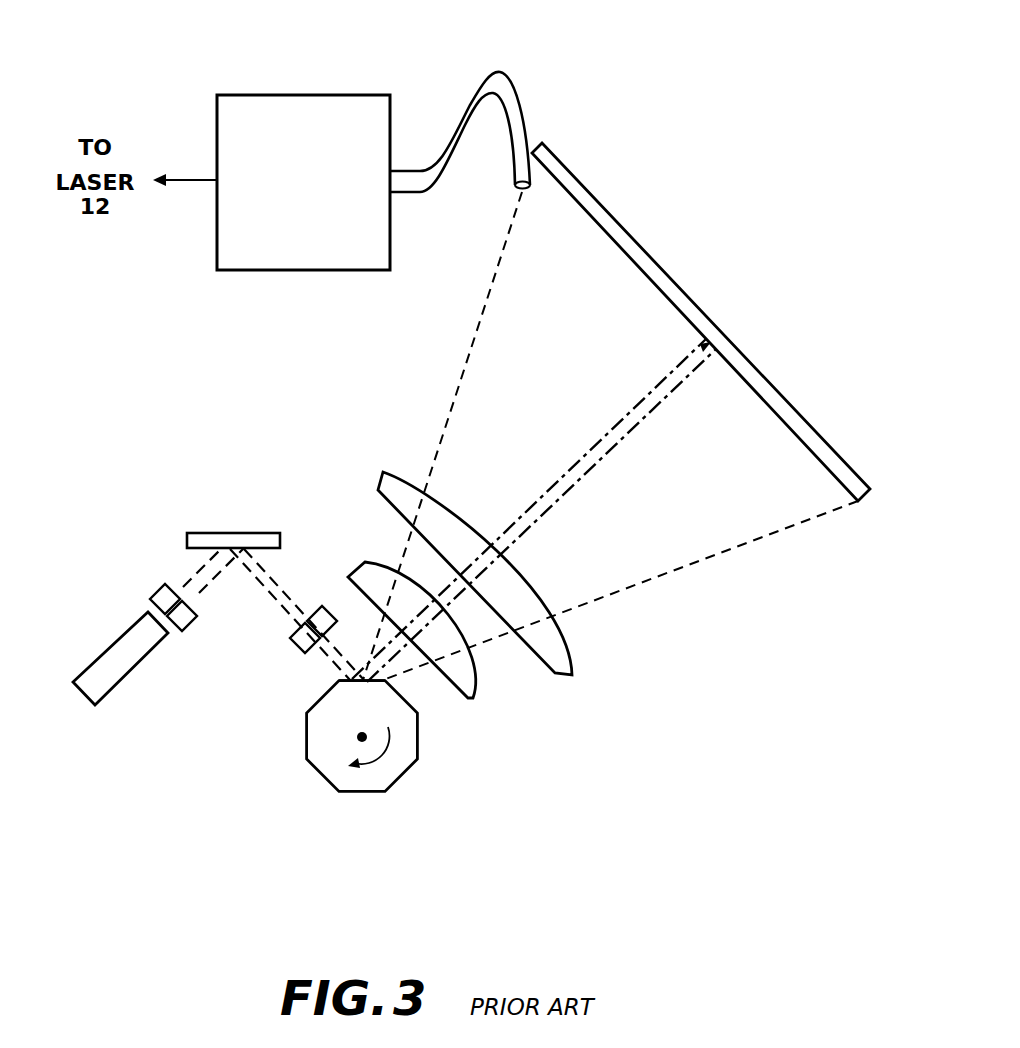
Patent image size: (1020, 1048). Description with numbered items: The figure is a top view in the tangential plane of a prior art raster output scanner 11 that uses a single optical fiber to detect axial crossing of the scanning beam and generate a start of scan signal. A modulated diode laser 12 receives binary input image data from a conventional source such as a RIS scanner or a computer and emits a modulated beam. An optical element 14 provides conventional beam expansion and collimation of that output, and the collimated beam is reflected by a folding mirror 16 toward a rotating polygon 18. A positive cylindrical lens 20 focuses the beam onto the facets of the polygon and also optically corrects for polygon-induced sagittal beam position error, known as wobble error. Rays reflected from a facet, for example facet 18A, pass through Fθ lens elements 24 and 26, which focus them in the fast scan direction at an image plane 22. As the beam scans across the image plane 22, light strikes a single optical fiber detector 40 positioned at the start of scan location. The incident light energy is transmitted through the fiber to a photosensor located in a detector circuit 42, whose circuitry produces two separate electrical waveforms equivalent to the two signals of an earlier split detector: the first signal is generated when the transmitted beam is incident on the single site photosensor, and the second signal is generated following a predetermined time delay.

The scanner 11 is at (343, 418).
The modulated diode laser 12 is at (112, 644).
The optical element 14 is at (163, 586).
The folding mirror 16 is at (242, 533).
The rotating polygon 18 is at (398, 778).
The facet 18A is at (340, 674).
The positive cylindrical lens 20 is at (291, 641).
The image plane 22 is at (683, 291).
The Fθ lens element 24 is at (475, 698).
The Fθ lens element 26 is at (567, 676).
The single optical fiber detector 40 is at (498, 48).
The detector circuit 42 is at (267, 95).